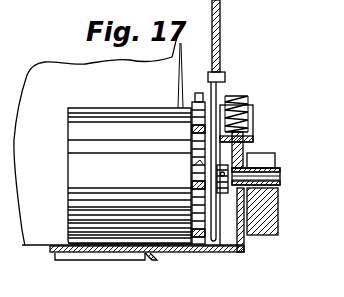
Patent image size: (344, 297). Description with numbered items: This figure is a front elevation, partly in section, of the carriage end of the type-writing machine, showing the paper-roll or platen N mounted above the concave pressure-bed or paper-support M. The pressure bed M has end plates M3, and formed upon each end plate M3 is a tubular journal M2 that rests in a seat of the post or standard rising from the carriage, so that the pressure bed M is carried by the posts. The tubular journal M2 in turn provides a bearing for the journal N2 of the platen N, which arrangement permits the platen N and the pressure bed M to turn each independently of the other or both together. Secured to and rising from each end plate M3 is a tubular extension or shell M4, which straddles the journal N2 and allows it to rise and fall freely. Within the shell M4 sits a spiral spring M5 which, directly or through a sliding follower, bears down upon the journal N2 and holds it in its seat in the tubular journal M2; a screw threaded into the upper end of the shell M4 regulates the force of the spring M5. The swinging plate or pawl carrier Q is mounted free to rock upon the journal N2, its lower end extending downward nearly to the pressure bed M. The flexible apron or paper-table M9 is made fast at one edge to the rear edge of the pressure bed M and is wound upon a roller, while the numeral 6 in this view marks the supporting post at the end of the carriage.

The flexible apron or paper-table M9 is at (96, 140).
The paper-roll or platen N is at (129, 143).
The swinging plate or pawl carrier Q is at (215, 89).
The tubular extensions or shells M4 is at (253, 117).
The spiral spring M5 is at (249, 135).
The journals of the paper-roll or platen N2 is at (265, 174).
The tubular journals M2 is at (283, 187).
The bearing block 6 is at (278, 201).
The end plates M3 is at (245, 245).
The concave pressure-bed or paper-support M is at (170, 258).